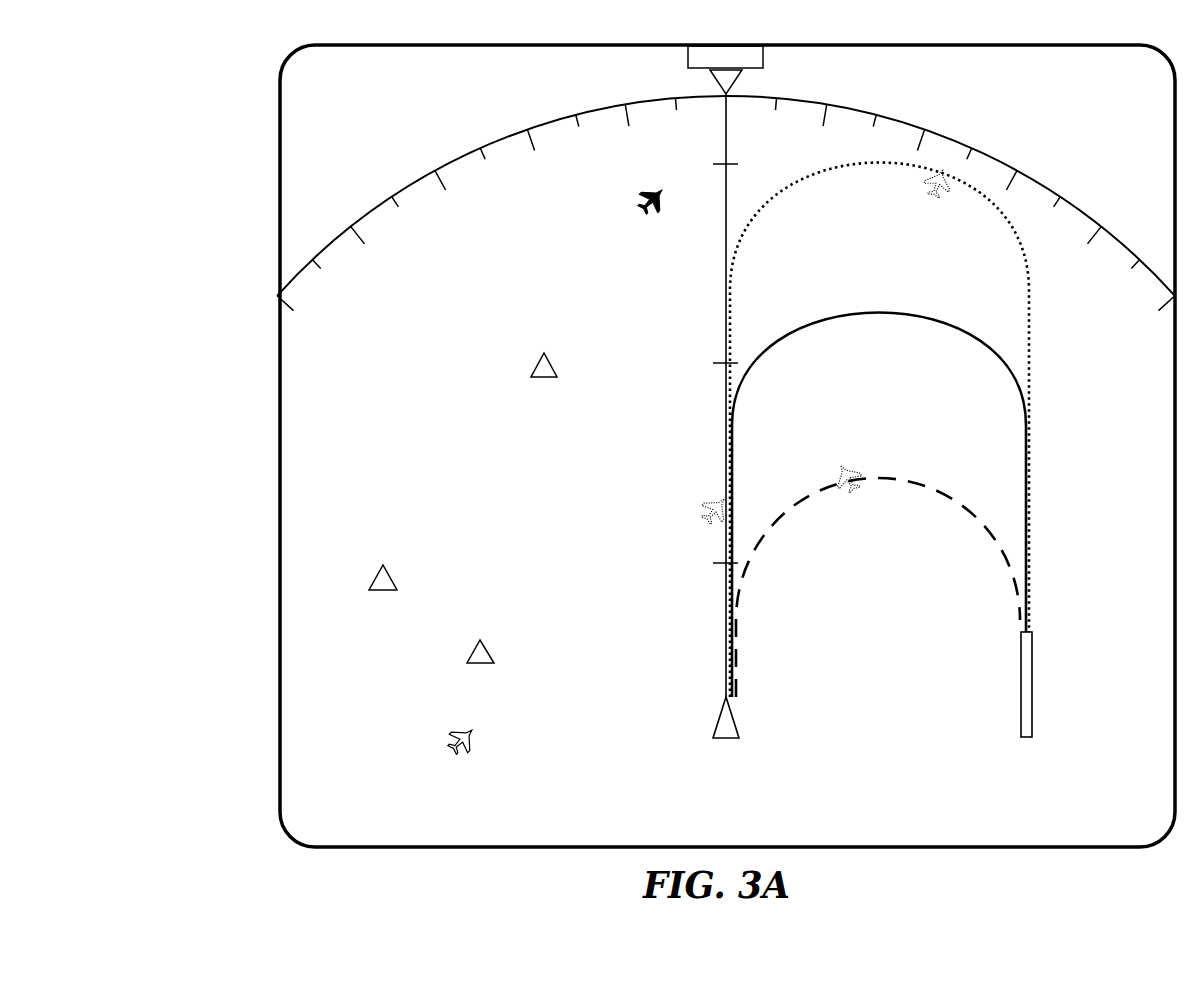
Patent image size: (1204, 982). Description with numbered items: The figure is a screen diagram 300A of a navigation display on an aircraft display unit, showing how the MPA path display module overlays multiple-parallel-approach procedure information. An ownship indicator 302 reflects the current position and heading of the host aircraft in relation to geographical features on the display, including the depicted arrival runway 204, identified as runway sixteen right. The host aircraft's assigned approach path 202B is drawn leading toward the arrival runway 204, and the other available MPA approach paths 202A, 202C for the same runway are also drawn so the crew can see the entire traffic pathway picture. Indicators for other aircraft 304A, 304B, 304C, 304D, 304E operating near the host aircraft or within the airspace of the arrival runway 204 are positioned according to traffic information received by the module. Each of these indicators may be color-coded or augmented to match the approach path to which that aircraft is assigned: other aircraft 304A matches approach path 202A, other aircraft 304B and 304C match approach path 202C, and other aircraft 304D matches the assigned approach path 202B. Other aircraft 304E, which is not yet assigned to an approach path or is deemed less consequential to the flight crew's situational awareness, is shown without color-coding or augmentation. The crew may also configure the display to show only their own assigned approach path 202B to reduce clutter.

The screen diagram 300A is at (212, 95).
The approach path 202A is at (930, 483).
The assigned approach path 202B is at (855, 313).
The approach path 202C is at (800, 178).
The arrival runway 204 is at (1022, 690).
The ownship indicator 302 is at (712, 722).
The other aircraft 304A is at (848, 463).
The other aircraft 304B is at (712, 504).
The other aircraft 304C is at (940, 200).
The other aircraft 304D is at (650, 212).
The other aircraft 304E is at (462, 727).